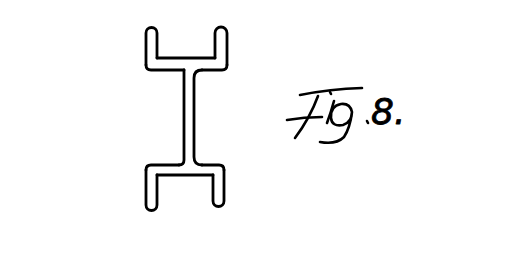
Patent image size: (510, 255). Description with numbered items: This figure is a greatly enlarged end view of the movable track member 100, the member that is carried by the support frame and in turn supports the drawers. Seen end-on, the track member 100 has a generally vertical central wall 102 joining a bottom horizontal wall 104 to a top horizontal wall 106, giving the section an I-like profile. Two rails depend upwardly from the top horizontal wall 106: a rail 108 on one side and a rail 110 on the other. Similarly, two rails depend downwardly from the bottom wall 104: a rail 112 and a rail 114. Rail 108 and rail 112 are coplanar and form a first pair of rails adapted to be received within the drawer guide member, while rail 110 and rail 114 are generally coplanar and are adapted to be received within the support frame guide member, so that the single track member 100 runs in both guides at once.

The movable track member 100 is at (238, 78).
The central wall 102 is at (193, 115).
The bottom horizontal wall 104 is at (204, 176).
The top horizontal wall 106 is at (205, 71).
The rail 108 is at (148, 35).
The rail 110 is at (226, 35).
The rail 112 is at (150, 196).
The rail 114 is at (226, 199).